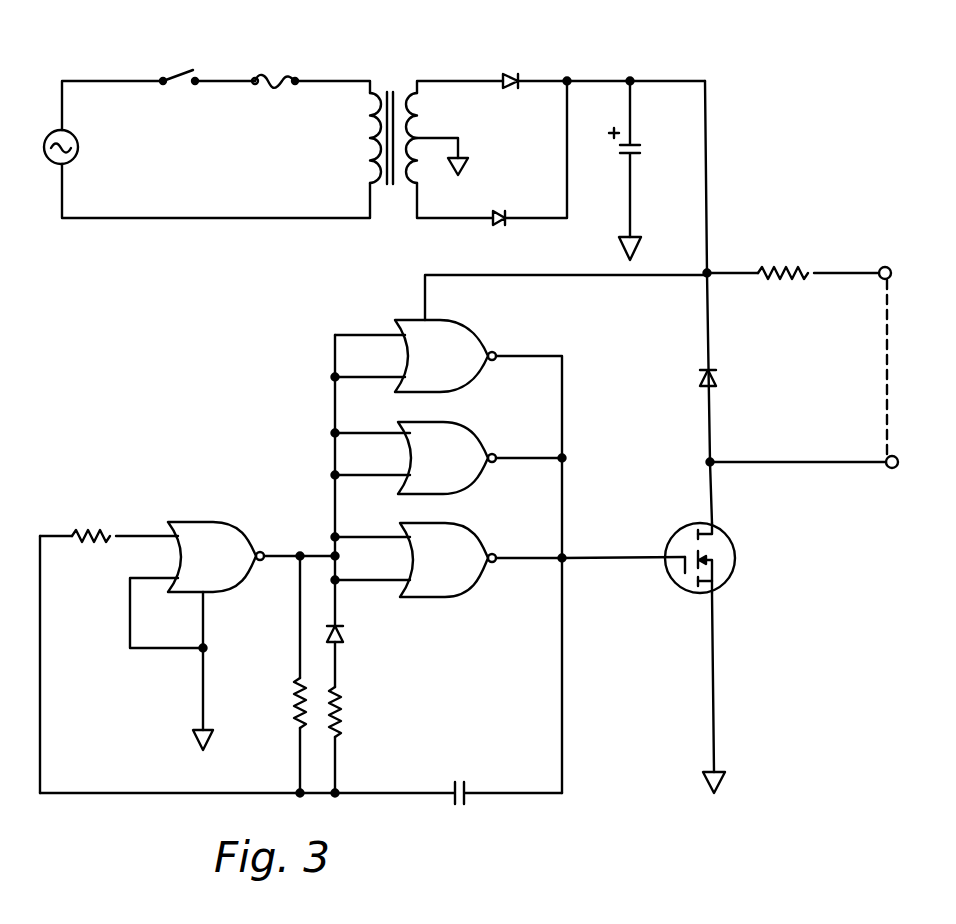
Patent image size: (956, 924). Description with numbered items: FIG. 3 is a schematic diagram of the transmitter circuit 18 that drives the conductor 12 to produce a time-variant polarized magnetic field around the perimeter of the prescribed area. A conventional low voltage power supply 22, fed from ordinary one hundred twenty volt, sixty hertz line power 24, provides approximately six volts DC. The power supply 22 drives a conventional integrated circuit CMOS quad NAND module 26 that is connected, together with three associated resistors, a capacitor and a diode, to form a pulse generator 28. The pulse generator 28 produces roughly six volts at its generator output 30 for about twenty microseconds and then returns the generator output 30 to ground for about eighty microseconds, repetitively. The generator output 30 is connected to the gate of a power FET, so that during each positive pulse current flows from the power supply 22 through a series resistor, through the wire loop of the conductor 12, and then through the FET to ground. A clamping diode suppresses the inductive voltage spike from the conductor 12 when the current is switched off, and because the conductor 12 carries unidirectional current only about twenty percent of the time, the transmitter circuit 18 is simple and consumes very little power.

The conductor 12 is at (880, 448).
The transmitter circuit 18 is at (745, 678).
The low voltage power supply 22 is at (224, 242).
The line power 24 is at (70, 162).
The CMOS quad NAND module 26 is at (246, 532).
The pulse generator 28 is at (325, 442).
The generator output 30 is at (580, 553).